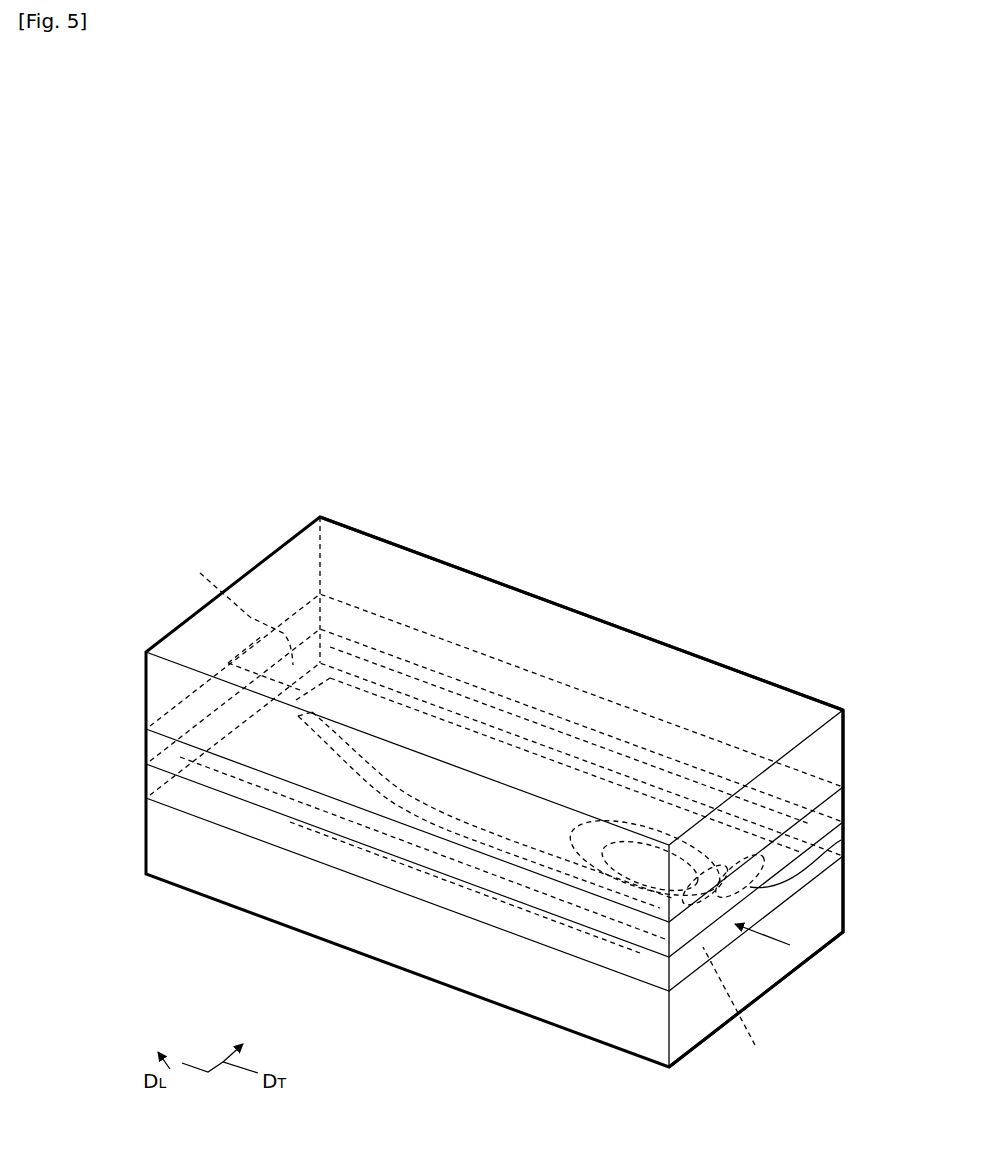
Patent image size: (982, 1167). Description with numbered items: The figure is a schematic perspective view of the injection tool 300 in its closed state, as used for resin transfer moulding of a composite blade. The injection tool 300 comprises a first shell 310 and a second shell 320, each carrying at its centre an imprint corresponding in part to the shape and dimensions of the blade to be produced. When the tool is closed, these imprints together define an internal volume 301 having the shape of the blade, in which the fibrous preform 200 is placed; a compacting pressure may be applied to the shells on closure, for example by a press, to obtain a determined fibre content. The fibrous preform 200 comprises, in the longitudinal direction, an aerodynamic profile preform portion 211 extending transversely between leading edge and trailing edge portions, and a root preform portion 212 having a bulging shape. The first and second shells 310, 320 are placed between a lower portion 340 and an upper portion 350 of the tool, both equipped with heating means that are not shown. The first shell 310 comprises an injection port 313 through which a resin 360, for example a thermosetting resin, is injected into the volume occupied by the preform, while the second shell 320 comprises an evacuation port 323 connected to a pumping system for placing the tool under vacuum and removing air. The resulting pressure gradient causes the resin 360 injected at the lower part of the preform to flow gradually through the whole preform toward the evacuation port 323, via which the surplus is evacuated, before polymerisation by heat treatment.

The fibrous preform 200 is at (575, 780).
The aerodynamic profile preform portion 211 is at (443, 743).
The root preform portion 212 is at (846, 838).
The injection tool 300 is at (83, 697).
The internal volume 301 is at (358, 830).
The first shell 310 is at (144, 785).
The injection port 313 is at (720, 930).
The second shell 320 is at (144, 740).
The evacuation port 323 is at (227, 663).
The lower portion 340 is at (822, 915).
The upper portion 350 is at (800, 692).
The resin 360 is at (760, 933).